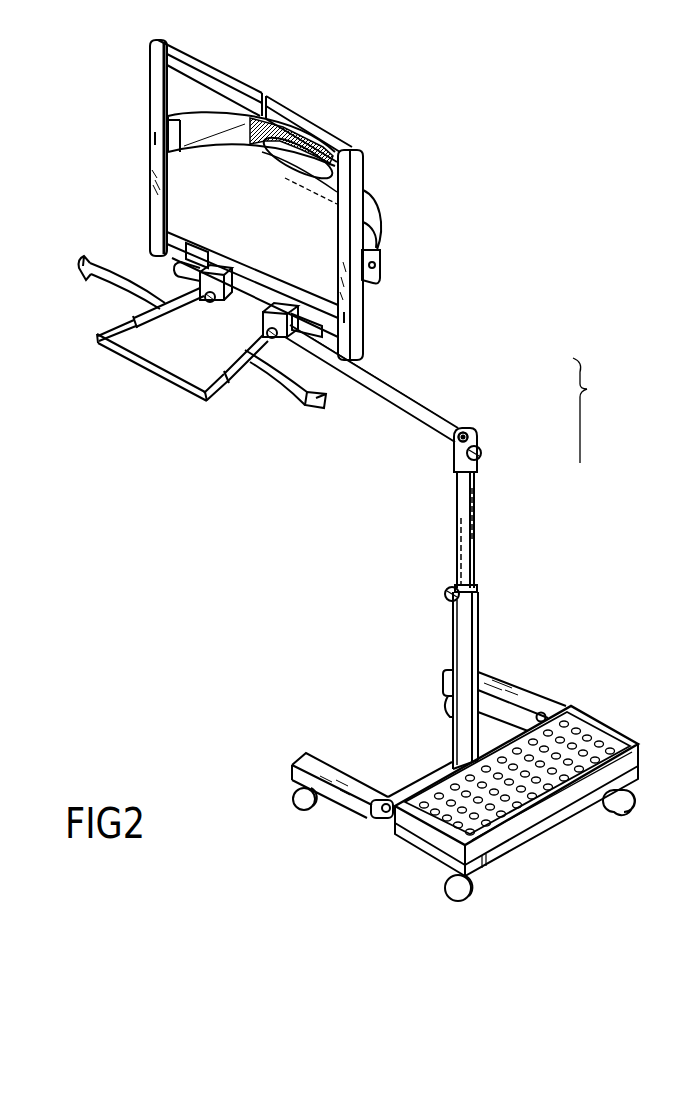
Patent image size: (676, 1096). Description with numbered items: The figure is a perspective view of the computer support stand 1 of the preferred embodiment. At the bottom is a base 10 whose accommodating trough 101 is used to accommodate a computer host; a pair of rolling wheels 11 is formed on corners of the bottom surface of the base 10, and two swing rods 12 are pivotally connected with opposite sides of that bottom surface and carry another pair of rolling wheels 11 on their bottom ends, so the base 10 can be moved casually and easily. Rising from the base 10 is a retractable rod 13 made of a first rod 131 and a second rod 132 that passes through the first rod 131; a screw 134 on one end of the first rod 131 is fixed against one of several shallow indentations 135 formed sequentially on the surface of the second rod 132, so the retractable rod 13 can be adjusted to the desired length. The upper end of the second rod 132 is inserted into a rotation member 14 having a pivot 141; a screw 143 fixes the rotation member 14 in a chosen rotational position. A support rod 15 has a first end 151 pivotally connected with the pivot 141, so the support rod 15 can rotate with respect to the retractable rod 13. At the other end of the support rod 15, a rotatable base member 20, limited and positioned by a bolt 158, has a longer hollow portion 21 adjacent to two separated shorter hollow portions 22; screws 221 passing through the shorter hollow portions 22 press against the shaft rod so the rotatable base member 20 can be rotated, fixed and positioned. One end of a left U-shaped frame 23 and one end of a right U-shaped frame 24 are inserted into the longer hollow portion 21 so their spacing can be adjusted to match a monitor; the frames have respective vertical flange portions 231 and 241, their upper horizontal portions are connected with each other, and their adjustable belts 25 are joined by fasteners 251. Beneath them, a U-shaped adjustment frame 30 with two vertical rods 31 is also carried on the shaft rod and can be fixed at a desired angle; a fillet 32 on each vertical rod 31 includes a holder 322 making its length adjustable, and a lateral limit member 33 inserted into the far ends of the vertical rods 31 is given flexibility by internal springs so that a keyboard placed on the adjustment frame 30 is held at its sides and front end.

The mobility aid 1 is at (591, 410).
The base 10 is at (397, 833).
The tray 101 is at (603, 733).
The rolling wheels 11 is at (300, 808).
The swing rods 12 is at (512, 697).
The retractable rod 13 is at (428, 648).
The first rod 131 is at (472, 620).
The second rod 132 is at (468, 503).
The screw 134 is at (445, 595).
The shallow indentations 135 is at (461, 536).
The rotation member 14 is at (481, 421).
The pivot 141 is at (460, 438).
The screw 143 is at (483, 457).
The support rod 15 is at (416, 382).
The first end 151 is at (463, 437).
The bolt 158 is at (176, 272).
The rotatable base member 20 is at (259, 263).
The longer hollow portion 21 is at (291, 303).
The shorter hollow portions 22 is at (222, 270).
The screws 221 is at (206, 303).
The left U-shaped frame 23 is at (150, 50).
The vertical flange portion 231 is at (150, 137).
The right U-shaped frame 24 is at (358, 183).
The vertical flange portion 241 is at (346, 318).
The adjustable belts 25 is at (278, 163).
The fasteners 251 is at (252, 147).
The adjustment frame 30 is at (198, 414).
The vertical rods 31 is at (233, 375).
The fillet 32 is at (122, 297).
The holder 322 is at (84, 258).
The lateral limit member 33 is at (150, 367).